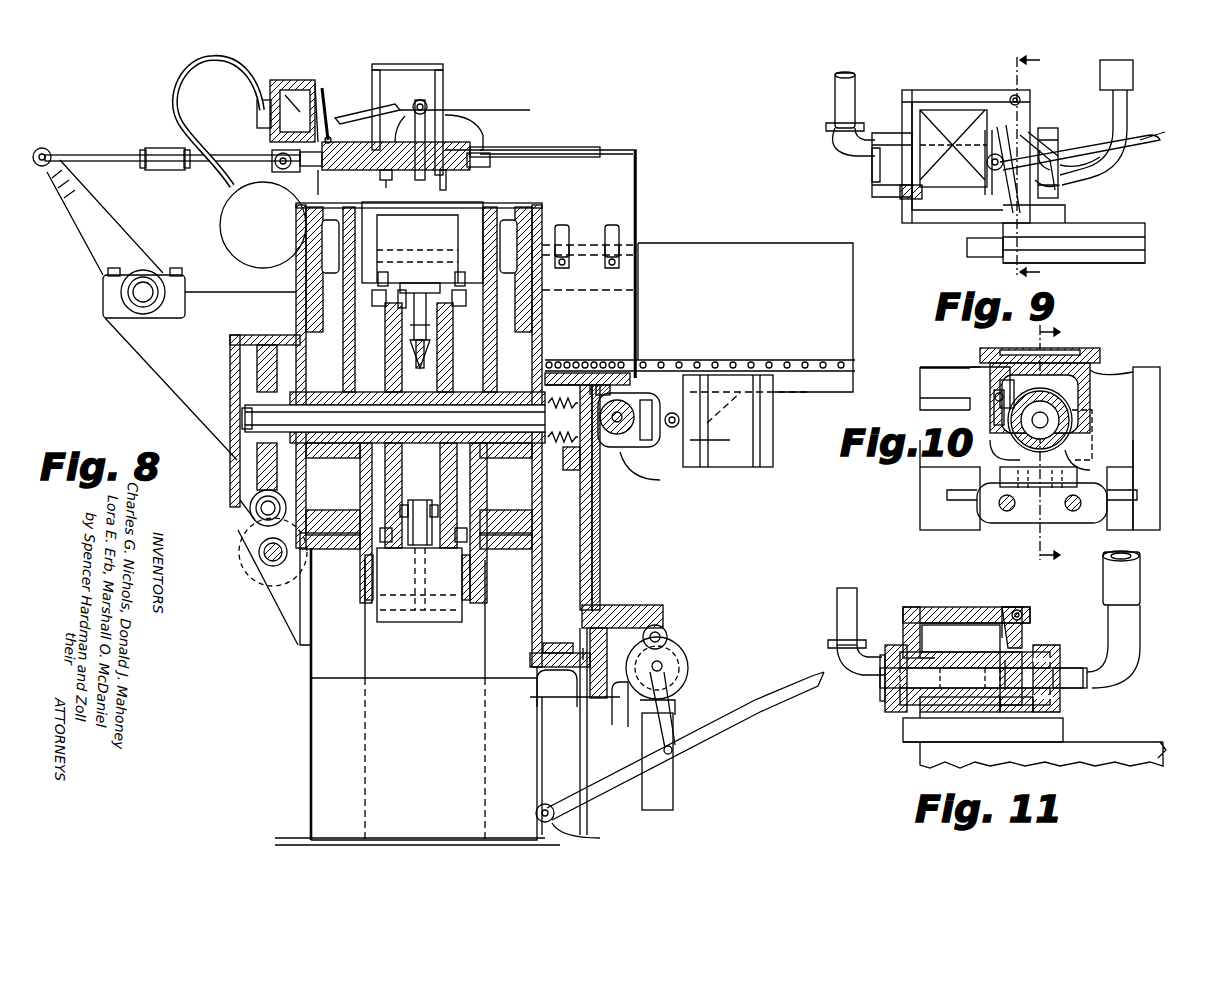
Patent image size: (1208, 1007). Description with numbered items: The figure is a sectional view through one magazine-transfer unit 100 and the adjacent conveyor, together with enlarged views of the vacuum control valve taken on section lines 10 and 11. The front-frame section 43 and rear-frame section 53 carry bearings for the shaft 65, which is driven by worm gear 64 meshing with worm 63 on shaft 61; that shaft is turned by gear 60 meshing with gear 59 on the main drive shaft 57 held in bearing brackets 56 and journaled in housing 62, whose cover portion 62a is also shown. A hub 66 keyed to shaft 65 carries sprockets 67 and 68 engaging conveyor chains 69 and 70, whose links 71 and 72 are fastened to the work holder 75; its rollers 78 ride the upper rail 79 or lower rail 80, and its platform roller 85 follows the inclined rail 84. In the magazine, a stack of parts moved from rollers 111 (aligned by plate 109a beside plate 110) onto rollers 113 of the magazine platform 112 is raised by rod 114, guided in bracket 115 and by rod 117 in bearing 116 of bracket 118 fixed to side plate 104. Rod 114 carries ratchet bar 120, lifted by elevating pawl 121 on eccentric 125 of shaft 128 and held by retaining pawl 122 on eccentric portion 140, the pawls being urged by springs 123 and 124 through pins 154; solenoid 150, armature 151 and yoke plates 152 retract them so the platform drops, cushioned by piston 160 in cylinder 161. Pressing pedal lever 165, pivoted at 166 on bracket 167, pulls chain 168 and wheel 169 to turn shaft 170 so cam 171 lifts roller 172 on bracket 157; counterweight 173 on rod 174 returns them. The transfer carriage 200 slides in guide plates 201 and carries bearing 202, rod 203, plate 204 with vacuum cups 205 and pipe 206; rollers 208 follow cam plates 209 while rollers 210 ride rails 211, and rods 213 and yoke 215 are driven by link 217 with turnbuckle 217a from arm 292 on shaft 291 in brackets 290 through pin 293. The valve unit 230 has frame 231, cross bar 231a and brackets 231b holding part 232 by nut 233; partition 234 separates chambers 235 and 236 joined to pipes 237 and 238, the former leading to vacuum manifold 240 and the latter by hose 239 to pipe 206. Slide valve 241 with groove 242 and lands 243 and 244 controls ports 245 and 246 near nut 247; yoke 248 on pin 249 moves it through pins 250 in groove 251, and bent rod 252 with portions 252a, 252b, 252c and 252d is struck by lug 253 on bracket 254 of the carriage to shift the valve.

In FIG. 9, the section line 10— 10 is at (1051, 167).
In FIG. 10, the section line 11— 11 is at (1064, 445).
In FIG. 8, the intermediate section 43 is at (482, 666).
In FIG. 8, the intermediate section 53 is at (310, 668).
In FIG. 8, the bearing bracket 56 is at (275, 603).
In FIG. 8, the main drive shaft 57 is at (265, 565).
In FIG. 8, the gear 59 is at (242, 563).
In FIG. 8, the gear 60 is at (268, 510).
In FIG. 8, the shaft 61 is at (250, 520).
In FIG. 8, the housing 62 is at (262, 343).
In FIG. 8, the gear housing cover 62a is at (232, 338).
In FIG. 8, the worm 63 is at (248, 506).
In FIG. 8, the worm gear 64 is at (230, 361).
In FIG. 8, the shaft 65 is at (508, 395).
In FIG. 8, the sleeve or hub 66 is at (378, 362).
In FIG. 8, the sprocket 67 is at (356, 338).
In FIG. 8, the sprocket 68 is at (425, 340).
In FIG. 8, the conveyor chain 69 is at (402, 283).
In FIG. 8, the conveyor chain 70 is at (422, 283).
In FIG. 8, the link 71 is at (388, 272).
In FIG. 8, the link 72 is at (452, 283).
In FIG. 8, the work holder 75 is at (460, 212).
In FIG. 8, the roller 78 is at (370, 266).
In FIG. 8, the upper rail 79 is at (374, 283).
In FIG. 8, the lower rail 80 is at (363, 586).
In FIG. 8, the rail 84 is at (483, 354).
In FIG. 8, the roller 85 is at (430, 326).
In FIG. 8, the magazine-transfer unit 100 is at (630, 152).
In FIG. 8, the vertical side plate 104 is at (580, 550).
In FIG. 8, the aligning plate 109a is at (804, 244).
In FIG. 8, the plate 110 is at (814, 362).
In FIG. 8, the roller 111 is at (775, 362).
In FIG. 8, the magazine platform 112 is at (622, 385).
In FIG. 8, the roller 113 is at (630, 370).
In FIG. 8, the rod 114 is at (580, 503).
In FIG. 8, the bracket 115 is at (568, 472).
In FIG. 8, the bearing 116 is at (575, 688).
In FIG. 8, the rod 117 is at (588, 716).
In FIG. 8, the bracket 118 is at (585, 709).
In FIG. 8, the ratchet bar 120 is at (604, 500).
In FIG. 8, the elevating pawl 121 is at (600, 390).
In FIG. 8, the retaining pawl 122 is at (625, 452).
In FIG. 8, the spring 123 is at (563, 389).
In FIG. 8, the spring 124 is at (563, 428).
In FIG. 8, the eccentric 125 is at (672, 428).
In FIG. 8, the shaft 128 is at (650, 400).
In FIG. 8, the eccentric portion 140 is at (628, 480).
In FIG. 8, the solenoid 150 is at (773, 434).
In FIG. 8, the armature 151 is at (722, 388).
In FIG. 8, the yoke plate 152 is at (700, 443).
In FIG. 8, the pin 154 is at (606, 385).
In FIG. 8, the bracket 157 is at (642, 606).
In FIG. 8, the piston 160 is at (583, 632).
In FIG. 8, the cylinder 161 is at (575, 640).
In FIG. 8, the pedal lever 165 is at (762, 712).
In FIG. 8, the pivot 166 is at (556, 815).
In FIG. 8, the bracket 167 is at (592, 835).
In FIG. 8, the chain 168 is at (690, 740).
In FIG. 8, the wheel 169 is at (688, 655).
In FIG. 8, the shaft 170 is at (662, 660).
In FIG. 8, the cam 171 is at (688, 685).
In FIG. 8, the roller 172 is at (664, 628).
In FIG. 8, the counterweight 173 is at (674, 790).
In FIG. 8, the rod 174 is at (680, 703).
In FIG. 8, the carriage plate 200 is at (360, 172).
In FIG. 9, the carriage plate 200 is at (1145, 237).
In FIG. 10, the carriage plate 200 is at (1030, 523).
In FIG. 9, the guide plate 201 is at (1105, 228).
In FIG. 10, the guide plate 201 is at (950, 505).
In FIG. 11, the guide plate 201 is at (975, 765).
In FIG. 8, the tubular bearing 202 is at (405, 116).
In FIG. 8, the rod 203 is at (428, 118).
In FIG. 8, the plate 204 is at (384, 178).
In FIG. 8, the vacuum cup 205 is at (440, 190).
In FIG. 8, the pipe 206 is at (444, 78).
In FIG. 8, the roller 208 is at (414, 106).
In FIG. 8, the cam plate 209 is at (485, 130).
In FIG. 8, the roller 210 is at (431, 98).
In FIG. 8, the rail 211 is at (515, 110).
In FIG. 8, the rod 213 is at (313, 186).
In FIG. 8, the yoke 215 is at (272, 152).
In FIG. 8, the link 217 is at (100, 155).
In FIG. 8, the turnbuckle 217a is at (165, 148).
In FIG. 8, the valve unit 230 is at (292, 80).
In FIG. 9, the valve unit 230 is at (953, 144).
In FIG. 10, the valve unit 230 is at (980, 354).
In FIG. 8, the frame 231 is at (314, 82).
In FIG. 9, the frame 231 is at (910, 106).
In FIG. 11, the frame 231 is at (955, 607).
In FIG. 9, the cross bar 231a is at (912, 158).
In FIG. 10, the cross bar 231a is at (1125, 368).
In FIG. 11, the cross bar 231a is at (903, 630).
In FIG. 9, the bracket 231b is at (960, 108).
In FIG. 10, the bracket 231b is at (1160, 378).
In FIG. 9, the part 232 is at (872, 180).
In FIG. 10, the part 232 is at (1080, 450).
In FIG. 11, the part 232 is at (885, 700).
In FIG. 8, the nut 233 is at (257, 118).
In FIG. 9, the nut 233 is at (900, 198).
In FIG. 11, the nut 233 is at (903, 645).
In FIG. 11, the partition 234 is at (985, 705).
In FIG. 11, the chamber 235 is at (915, 720).
In FIG. 10, the chamber 236 is at (1000, 378).
In FIG. 11, the chamber 236 is at (1075, 700).
In FIG. 8, the pipe 237 is at (178, 83).
In FIG. 9, the pipe 237 is at (836, 96).
In FIG. 11, the pipe 237 is at (858, 582).
In FIG. 8, the pipe 238 is at (381, 82).
In FIG. 9, the pipe 238 is at (1128, 108).
In FIG. 11, the pipe 238 is at (1120, 672).
In FIG. 9, the hose 239 is at (1133, 74).
In FIG. 11, the hose 239 is at (1140, 589).
In FIG. 8, the slide valve 241 is at (298, 102).
In FIG. 9, the slide valve 241 is at (940, 110).
In FIG. 10, the slide valve 241 is at (1068, 400).
In FIG. 11, the slide valve 241 is at (937, 652).
In FIG. 11, the groove 242 is at (960, 711).
In FIG. 11, the land 243 is at (930, 715).
In FIG. 11, the land 244 is at (1000, 708).
In FIG. 11, the port 245 is at (972, 660).
In FIG. 11, the port 246 is at (1020, 660).
In FIG. 9, the nut 247 is at (1058, 205).
In FIG. 11, the nut 247 is at (1058, 650).
In FIG. 8, the yoke 248 is at (343, 89).
In FIG. 9, the yoke 248 is at (1000, 128).
In FIG. 10, the yoke 248 is at (1085, 368).
In FIG. 9, the pin 249 is at (1022, 96).
In FIG. 10, the pin 249 is at (1030, 350).
In FIG. 11, the pin 249 is at (1020, 609).
In FIG. 9, the pin 250 is at (990, 170).
In FIG. 10, the pin 250 is at (1072, 414).
In FIG. 9, the groove 251 is at (1000, 207).
In FIG. 10, the groove 251 is at (1075, 425).
In FIG. 11, the groove 251 is at (1003, 615).
In FIG. 8, the bent rod 252 is at (362, 112).
In FIG. 9, the bent rod 252 is at (1140, 142).
In FIG. 10, the bent rod 252 is at (994, 394).
In FIG. 9, the downwardly extending portion 252a is at (1040, 128).
In FIG. 9, the arcuate portion 252b is at (1060, 186).
In FIG. 9, the upwardly extending portion 252c is at (1128, 162).
In FIG. 9, the bevel-end portion 252d is at (1150, 140).
In FIG. 9, the lug 253 is at (1062, 128).
In FIG. 10, the lug 253 is at (1018, 440).
In FIG. 9, the bracket 254 is at (1003, 222).
In FIG. 10, the bracket 254 is at (1080, 476).
In FIG. 8, the bracket 290 is at (146, 352).
In FIG. 8, the shaft 291 is at (143, 292).
In FIG. 8, the arm 292 is at (66, 220).
In FIG. 8, the pin 293 is at (42, 150).
In FIG. 8, the vacuum manifold 240 is at (220, 225).